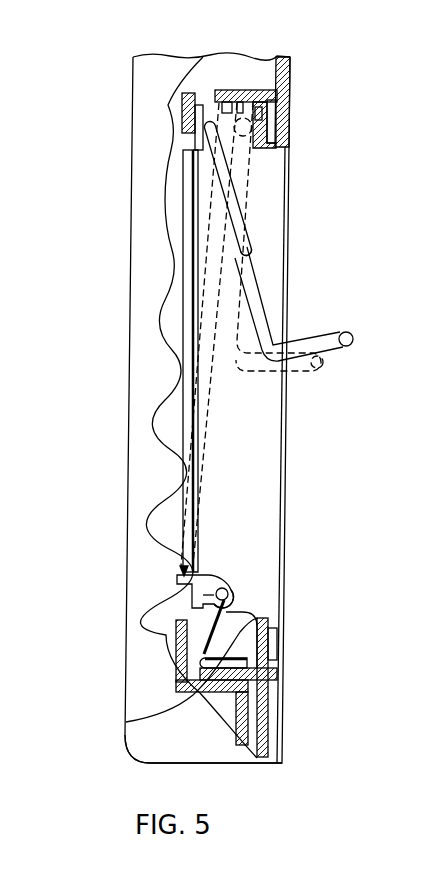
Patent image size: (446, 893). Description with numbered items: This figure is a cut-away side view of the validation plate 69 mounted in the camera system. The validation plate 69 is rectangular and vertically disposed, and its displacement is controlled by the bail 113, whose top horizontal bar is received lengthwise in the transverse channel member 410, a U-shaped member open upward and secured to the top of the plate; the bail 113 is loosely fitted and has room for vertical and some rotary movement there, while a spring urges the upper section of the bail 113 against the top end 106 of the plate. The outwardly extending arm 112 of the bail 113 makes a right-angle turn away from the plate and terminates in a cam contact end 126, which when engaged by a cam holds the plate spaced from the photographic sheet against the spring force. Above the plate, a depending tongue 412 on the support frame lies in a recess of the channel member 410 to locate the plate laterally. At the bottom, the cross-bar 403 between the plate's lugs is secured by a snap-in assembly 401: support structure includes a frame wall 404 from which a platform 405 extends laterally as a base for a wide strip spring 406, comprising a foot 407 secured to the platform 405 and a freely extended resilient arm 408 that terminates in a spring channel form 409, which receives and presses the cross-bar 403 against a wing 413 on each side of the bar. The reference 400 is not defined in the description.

The actuating rod 400 is at (207, 100).
The depending tongue 412 is at (243, 108).
The transverse channel member 410 is at (194, 134).
The top end 106 is at (183, 197).
The validation plate 69 is at (183, 262).
The outwardly extending arm 112 is at (250, 249).
The bail 113 is at (263, 300).
The cam contact end 126 is at (353, 337).
The snap-in assembly 401 is at (231, 561).
The spring channel form 409 is at (229, 585).
The cross-bar 403 is at (214, 580).
The strip spring 406 is at (200, 613).
The wing 413 is at (200, 660).
The resilient arm 408 is at (177, 660).
The foot 407 is at (278, 632).
The frame wall 404 is at (282, 682).
The platform 405 is at (126, 722).